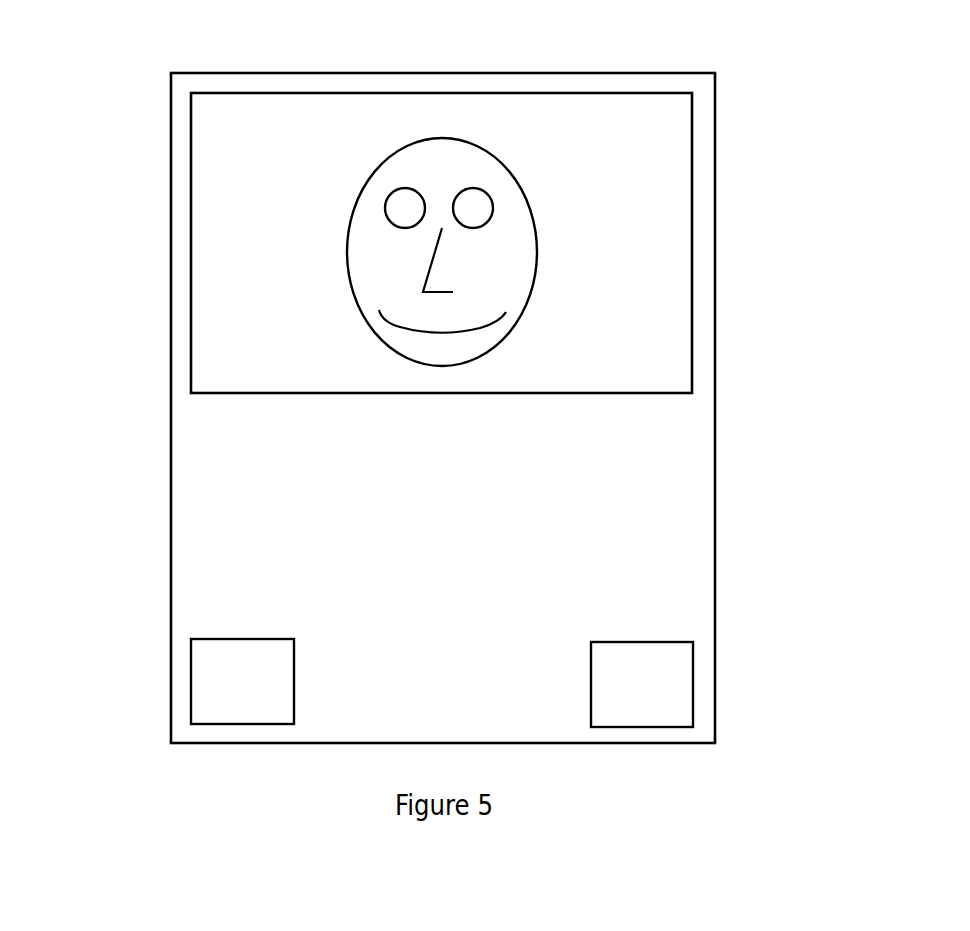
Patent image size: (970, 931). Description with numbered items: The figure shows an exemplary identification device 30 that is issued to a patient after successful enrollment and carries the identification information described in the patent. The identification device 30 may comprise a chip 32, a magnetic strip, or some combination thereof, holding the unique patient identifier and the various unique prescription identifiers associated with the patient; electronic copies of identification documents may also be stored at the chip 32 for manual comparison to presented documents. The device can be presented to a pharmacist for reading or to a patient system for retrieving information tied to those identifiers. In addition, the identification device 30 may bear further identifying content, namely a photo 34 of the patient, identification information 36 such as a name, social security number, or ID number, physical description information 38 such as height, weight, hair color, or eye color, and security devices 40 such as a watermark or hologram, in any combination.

The identification device 30 is at (840, 108).
The chip 32 is at (227, 697).
The photo 34 is at (658, 330).
The identification information 36 is at (187, 430).
The physical description information 38 is at (190, 482).
The security devices 40 is at (627, 699).